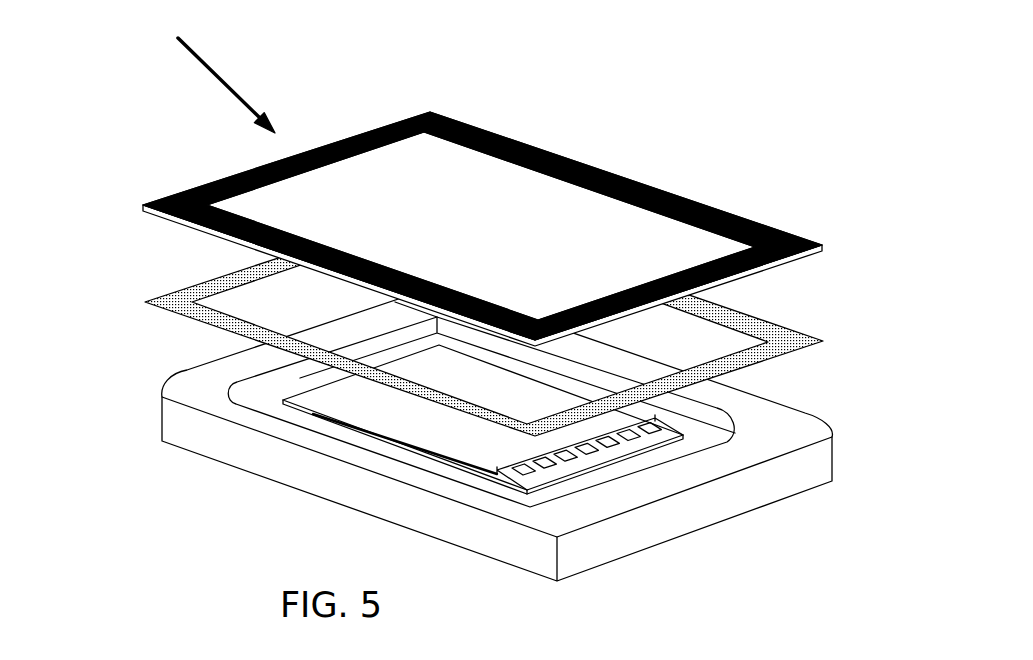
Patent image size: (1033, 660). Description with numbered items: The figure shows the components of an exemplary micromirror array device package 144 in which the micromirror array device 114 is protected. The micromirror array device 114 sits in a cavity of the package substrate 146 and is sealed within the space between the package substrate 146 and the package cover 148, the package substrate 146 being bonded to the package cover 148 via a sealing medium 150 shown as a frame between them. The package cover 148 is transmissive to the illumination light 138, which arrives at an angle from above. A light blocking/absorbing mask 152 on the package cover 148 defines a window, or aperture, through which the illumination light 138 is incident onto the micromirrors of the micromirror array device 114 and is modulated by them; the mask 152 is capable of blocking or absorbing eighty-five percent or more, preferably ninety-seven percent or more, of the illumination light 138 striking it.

The micromirror array device 114 is at (452, 435).
The illumination light 138 is at (235, 87).
The micromirror array device package 144 is at (562, 117).
The package substrate 146 is at (818, 418).
The package cover 148 is at (610, 227).
The sealing medium 150 is at (168, 293).
The light blocking/absorbing mask 152 is at (430, 110).